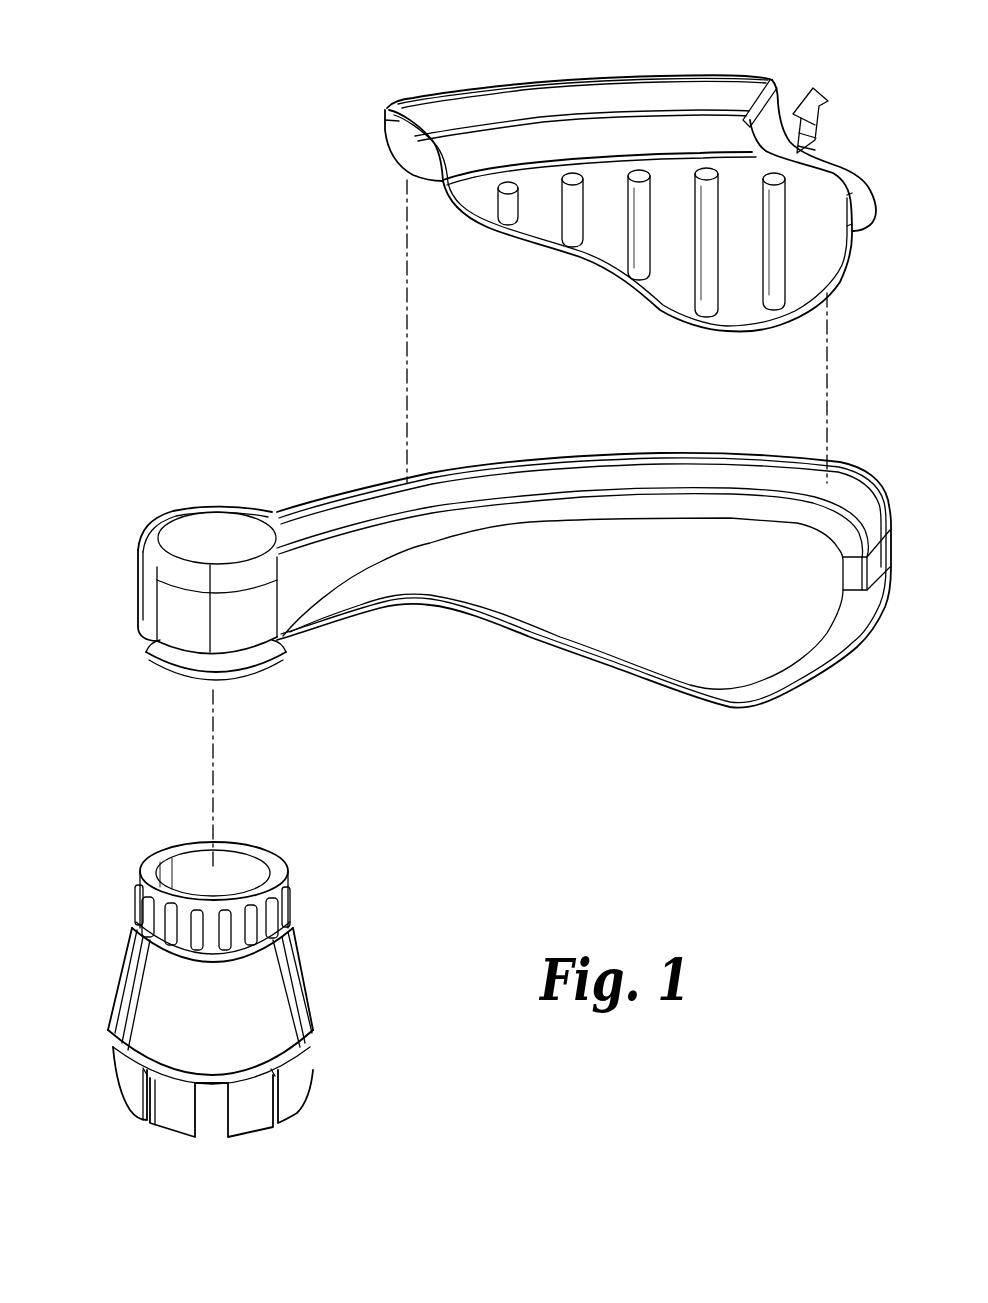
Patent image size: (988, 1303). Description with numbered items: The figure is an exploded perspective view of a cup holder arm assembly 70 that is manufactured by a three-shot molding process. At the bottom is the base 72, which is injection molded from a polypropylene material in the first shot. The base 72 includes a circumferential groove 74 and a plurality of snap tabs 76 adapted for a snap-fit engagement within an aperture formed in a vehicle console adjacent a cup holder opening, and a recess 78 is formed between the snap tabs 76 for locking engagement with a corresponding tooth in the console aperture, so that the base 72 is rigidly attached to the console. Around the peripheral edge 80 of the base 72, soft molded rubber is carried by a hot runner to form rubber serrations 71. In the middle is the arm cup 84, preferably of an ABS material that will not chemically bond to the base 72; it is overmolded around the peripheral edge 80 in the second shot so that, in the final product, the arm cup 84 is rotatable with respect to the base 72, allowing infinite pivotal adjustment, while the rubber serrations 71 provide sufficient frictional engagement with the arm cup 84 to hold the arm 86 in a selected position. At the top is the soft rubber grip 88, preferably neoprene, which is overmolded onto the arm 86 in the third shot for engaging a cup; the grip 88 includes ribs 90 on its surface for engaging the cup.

The cup holder arm assembly 70 is at (223, 172).
The rubber serrations 71 is at (138, 918).
The base 72 is at (140, 972).
The circumferential groove 74 is at (117, 1058).
The snap tabs 76 is at (163, 1117).
The recess 78 is at (212, 1122).
The peripheral edge 80 is at (288, 880).
The arm cup 84 is at (143, 580).
The arm 86 is at (387, 583).
The soft rubber grip 88 is at (587, 100).
The ribs 90 is at (713, 316).